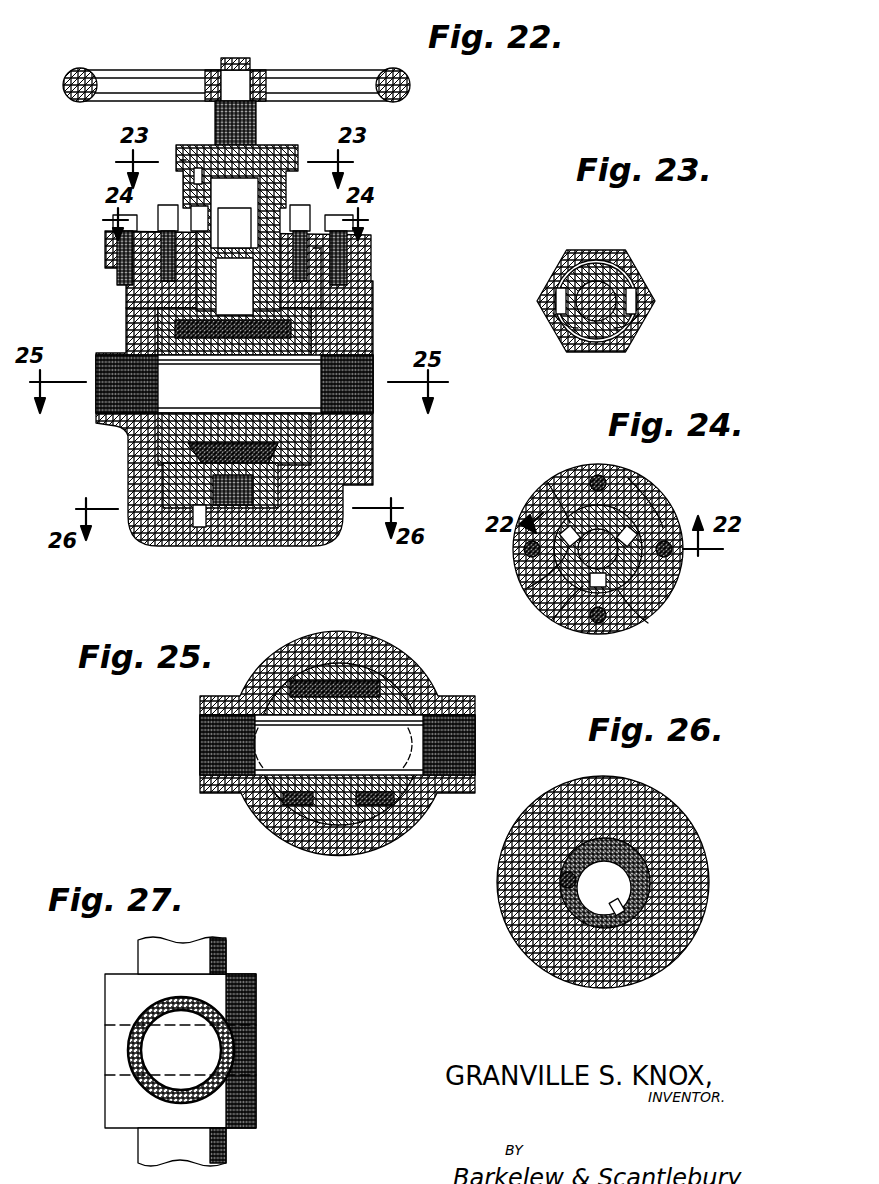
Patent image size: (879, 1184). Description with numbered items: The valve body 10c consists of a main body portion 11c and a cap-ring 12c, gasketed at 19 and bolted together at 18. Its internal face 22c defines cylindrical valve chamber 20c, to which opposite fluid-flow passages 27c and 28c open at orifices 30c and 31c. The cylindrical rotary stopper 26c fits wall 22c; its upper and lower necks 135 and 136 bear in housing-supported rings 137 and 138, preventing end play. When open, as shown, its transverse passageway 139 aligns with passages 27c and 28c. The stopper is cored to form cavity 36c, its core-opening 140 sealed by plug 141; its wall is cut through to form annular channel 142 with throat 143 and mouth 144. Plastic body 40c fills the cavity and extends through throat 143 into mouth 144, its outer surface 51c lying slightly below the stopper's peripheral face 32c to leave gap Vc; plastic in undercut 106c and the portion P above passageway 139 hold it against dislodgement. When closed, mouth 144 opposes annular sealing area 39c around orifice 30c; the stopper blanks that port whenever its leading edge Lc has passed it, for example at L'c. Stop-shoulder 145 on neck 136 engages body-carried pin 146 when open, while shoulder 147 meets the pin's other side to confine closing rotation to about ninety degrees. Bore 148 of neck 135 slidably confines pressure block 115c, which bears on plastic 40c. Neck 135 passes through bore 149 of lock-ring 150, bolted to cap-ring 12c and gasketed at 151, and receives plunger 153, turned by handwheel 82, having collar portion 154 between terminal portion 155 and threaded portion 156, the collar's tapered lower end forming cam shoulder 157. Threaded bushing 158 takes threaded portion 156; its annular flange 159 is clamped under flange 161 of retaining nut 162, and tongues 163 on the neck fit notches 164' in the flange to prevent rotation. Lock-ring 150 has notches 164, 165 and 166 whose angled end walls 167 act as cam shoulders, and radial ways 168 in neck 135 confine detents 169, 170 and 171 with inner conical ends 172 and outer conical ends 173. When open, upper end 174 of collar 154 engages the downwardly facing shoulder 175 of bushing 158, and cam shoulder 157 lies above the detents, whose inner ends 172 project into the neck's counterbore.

In FIG. 22, the handwheel 82 is at (338, 64).
In FIG. 22, the threaded portion 156 is at (207, 105).
In FIG. 23, the threaded portion 156 is at (620, 322).
In FIG. 22, the retaining nut 162 is at (272, 148).
In FIG. 23, the retaining nut 162 is at (548, 252).
In FIG. 22, the collar portion 154 is at (234, 213).
In FIG. 22, the terminal portion 155 is at (234, 228).
In FIG. 22, the upper end of stem-collar 174 is at (248, 126).
In FIG. 22, the flange on retaining nut 161 is at (272, 138).
In FIG. 22, the downwardly facing shoulder 175 is at (207, 138).
In FIG. 22, the threaded bushing 158 is at (247, 158).
In FIG. 23, the threaded bushing 158 is at (612, 245).
In FIG. 22, the plunger 153 is at (284, 146).
In FIG. 22, the notch 164 is at (166, 149).
In FIG. 24, the notch 164 is at (524, 568).
In FIG. 22, the tongues 163 is at (186, 164).
In FIG. 23, the tongues 163 is at (628, 285).
In FIG. 22, the cam shoulder 157 is at (268, 188).
In FIG. 22, the bore of lock-ring 149 is at (282, 206).
In FIG. 24, the bore of lock-ring 149 is at (628, 569).
In FIG. 22, the upper axial neck 135 is at (266, 203).
In FIG. 23, the upper axial neck 135 is at (610, 262).
In FIG. 24, the upper axial neck 135 is at (598, 497).
In FIG. 27, the upper axial neck 135 is at (219, 944).
In FIG. 22, the latching detent 169 is at (183, 200).
In FIG. 24, the latching detent 169 is at (560, 518).
In FIG. 22, the valve body 10c is at (120, 466).
In FIG. 25, the valve body 10c is at (358, 628).
In FIG. 22, the cap-ring 12c is at (365, 236).
In FIG. 22, the lock-ring 150 is at (105, 236).
In FIG. 24, the lock-ring 150 is at (640, 518).
In FIG. 22, the bore of stopper-neck 148 is at (150, 278).
In FIG. 22, the gasket 151 is at (302, 236).
In FIG. 22, the bolts 18 is at (345, 212).
In FIG. 22, the gasket 19 is at (345, 266).
In FIG. 22, the housing-supported ring 137 is at (320, 280).
In FIG. 22, the outer conical ends 173 is at (190, 266).
In FIG. 24, the outer conical ends 173 is at (560, 600).
In FIG. 22, the pressure block 115c is at (150, 303).
In FIG. 22, the rotary plug or stopper 26c is at (303, 304).
In FIG. 25, the rotary plug or stopper 26c is at (328, 658).
In FIG. 27, the rotary plug or stopper 26c is at (250, 968).
In FIG. 22, the cavity 36c is at (167, 318).
In FIG. 25, the cavity 36c is at (362, 672).
In FIG. 22, the body of plastic 40c is at (167, 330).
In FIG. 25, the body of plastic 40c is at (395, 681).
In FIG. 27, the body of plastic 40c is at (128, 1060).
In FIG. 22, the through-bore or passageway 139 is at (234, 384).
In FIG. 25, the through-bore or passageway 139 is at (337, 745).
In FIG. 27, the through-bore or passageway 139 is at (232, 1008).
In FIG. 22, the orifice 30c is at (150, 376).
In FIG. 25, the orifice 30c is at (245, 688).
In FIG. 22, the orifice 31c is at (295, 368).
In FIG. 25, the orifice 31c is at (440, 688).
In FIG. 22, the fluid-flow passage 28c is at (355, 358).
In FIG. 25, the fluid-flow passage 28c is at (455, 736).
In FIG. 22, the annular sealing area 39c is at (140, 356).
In FIG. 22, the fluid-flow passage 27c is at (92, 382).
In FIG. 25, the fluid-flow passage 27c is at (192, 738).
In FIG. 22, the valve chamber 20c is at (303, 443).
In FIG. 25, the valve chamber 20c is at (400, 698).
In FIG. 22, the peripheral face of stopper 32c is at (303, 418).
In FIG. 25, the peripheral face of stopper 32c is at (352, 840).
In FIG. 27, the peripheral face of stopper 32c is at (235, 1101).
In FIG. 22, the internal peripheral face 22c is at (150, 428).
In FIG. 25, the internal peripheral face 22c is at (262, 805).
In FIG. 22, the housing-supported ring 138 is at (270, 468).
In FIG. 22, the core-opening 140 is at (245, 480).
In FIG. 22, the plug 141 is at (225, 497).
In FIG. 22, the stop-shoulder 145 is at (188, 519).
In FIG. 26, the stop-shoulder 145 is at (552, 870).
In FIG. 22, the body-carried pin 146 is at (170, 538).
In FIG. 26, the body-carried pin 146 is at (565, 880).
In FIG. 22, the lower axial neck 136 is at (308, 470).
In FIG. 26, the lower axial neck 136 is at (590, 840).
In FIG. 27, the lower axial neck 136 is at (219, 1145).
In FIG. 22, the main body portion 11c is at (130, 518).
In FIG. 25, the main body portion 11c is at (386, 638).
In FIG. 26, the main body portion 11c is at (678, 818).
In FIG. 23, the annular external flange 159 is at (580, 262).
In FIG. 23, the notches 164' is at (621, 332).
In FIG. 24, the notch 165 is at (628, 460).
In FIG. 24, the radially extending bores or ways 168 is at (562, 515).
In FIG. 24, the latching detent 170 is at (622, 518).
In FIG. 24, the inner conical ends 172 is at (622, 518).
In FIG. 24, the end walls of notches 167 is at (540, 576).
In FIG. 24, the latching detent 171 is at (605, 590).
In FIG. 24, the notch 166 is at (618, 600).
In FIG. 25, the portion of plastic body P is at (310, 688).
In FIG. 25, the leading edge position L'c is at (272, 670).
In FIG. 25, the leading edge Lc is at (240, 785).
In FIG. 25, the gap Vc is at (382, 818).
In FIG. 25, the annular mouth 144 is at (285, 802).
In FIG. 27, the annular mouth 144 is at (226, 1058).
In FIG. 25, the annular channel 142 is at (300, 800).
In FIG. 27, the annular channel 142 is at (125, 1006).
In FIG. 25, the annular throat portion 143 is at (360, 803).
In FIG. 25, the outer surface of plastic 51c is at (318, 812).
In FIG. 27, the outer surface of plastic 51c is at (226, 1036).
In FIG. 25, the undercut 106c is at (330, 820).
In FIG. 26, the stopper shoulder 147 is at (598, 918).